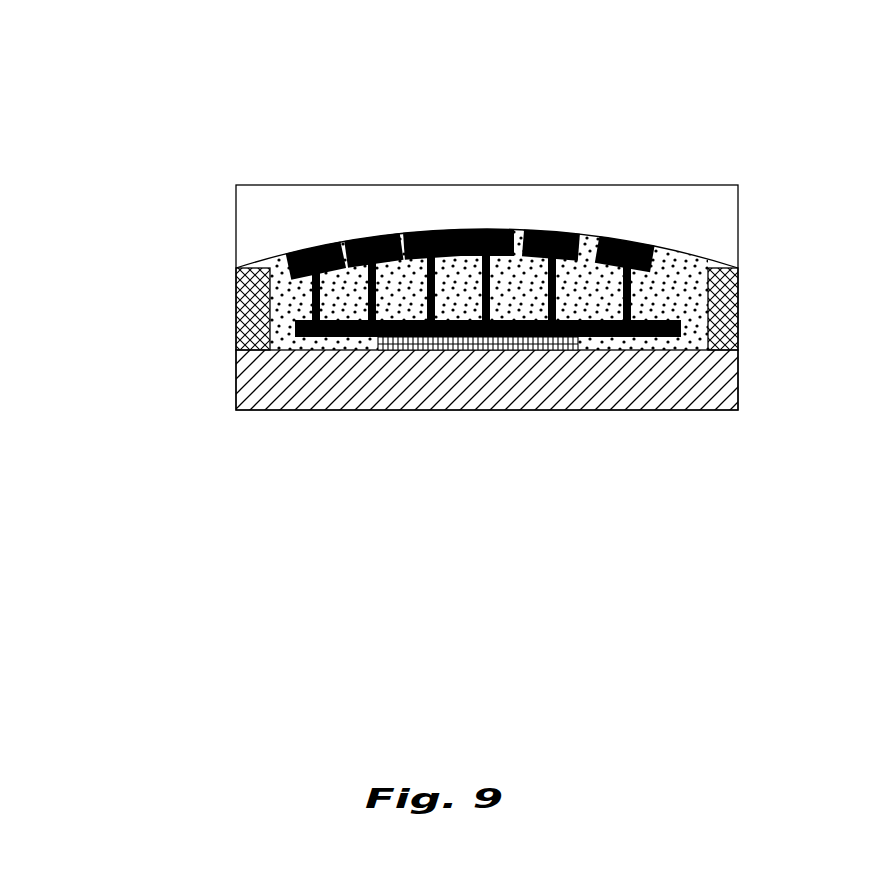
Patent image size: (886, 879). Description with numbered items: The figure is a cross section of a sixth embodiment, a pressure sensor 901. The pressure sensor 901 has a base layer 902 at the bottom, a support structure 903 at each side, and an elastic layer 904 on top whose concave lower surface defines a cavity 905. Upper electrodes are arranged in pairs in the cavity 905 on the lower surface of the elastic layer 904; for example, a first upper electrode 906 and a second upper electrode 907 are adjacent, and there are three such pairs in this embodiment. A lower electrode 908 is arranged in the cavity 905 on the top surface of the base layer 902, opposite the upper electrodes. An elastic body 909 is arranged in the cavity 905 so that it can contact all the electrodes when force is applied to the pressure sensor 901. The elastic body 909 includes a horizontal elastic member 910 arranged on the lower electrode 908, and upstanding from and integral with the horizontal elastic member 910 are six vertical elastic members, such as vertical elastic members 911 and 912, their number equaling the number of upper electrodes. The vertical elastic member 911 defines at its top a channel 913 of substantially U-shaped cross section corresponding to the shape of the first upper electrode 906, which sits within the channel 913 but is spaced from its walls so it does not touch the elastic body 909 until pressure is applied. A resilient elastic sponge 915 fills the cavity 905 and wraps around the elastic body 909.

The pressure sensor 901 is at (178, 142).
The base layer 902 is at (520, 398).
The support structure 903 is at (738, 278).
The elastic layer 904 is at (712, 195).
The cavity 905 is at (700, 343).
The first upper electrode 906 is at (445, 230).
The second upper electrode 907 is at (485, 233).
The lower electrode 908 is at (437, 347).
The elastic body 909 is at (297, 343).
The horizontal elastic member 910 is at (362, 340).
The vertical elastic member 911 is at (427, 297).
The vertical elastic member 912 is at (490, 270).
The channel 913 is at (406, 231).
The resilient elastic sponge 915 is at (700, 318).